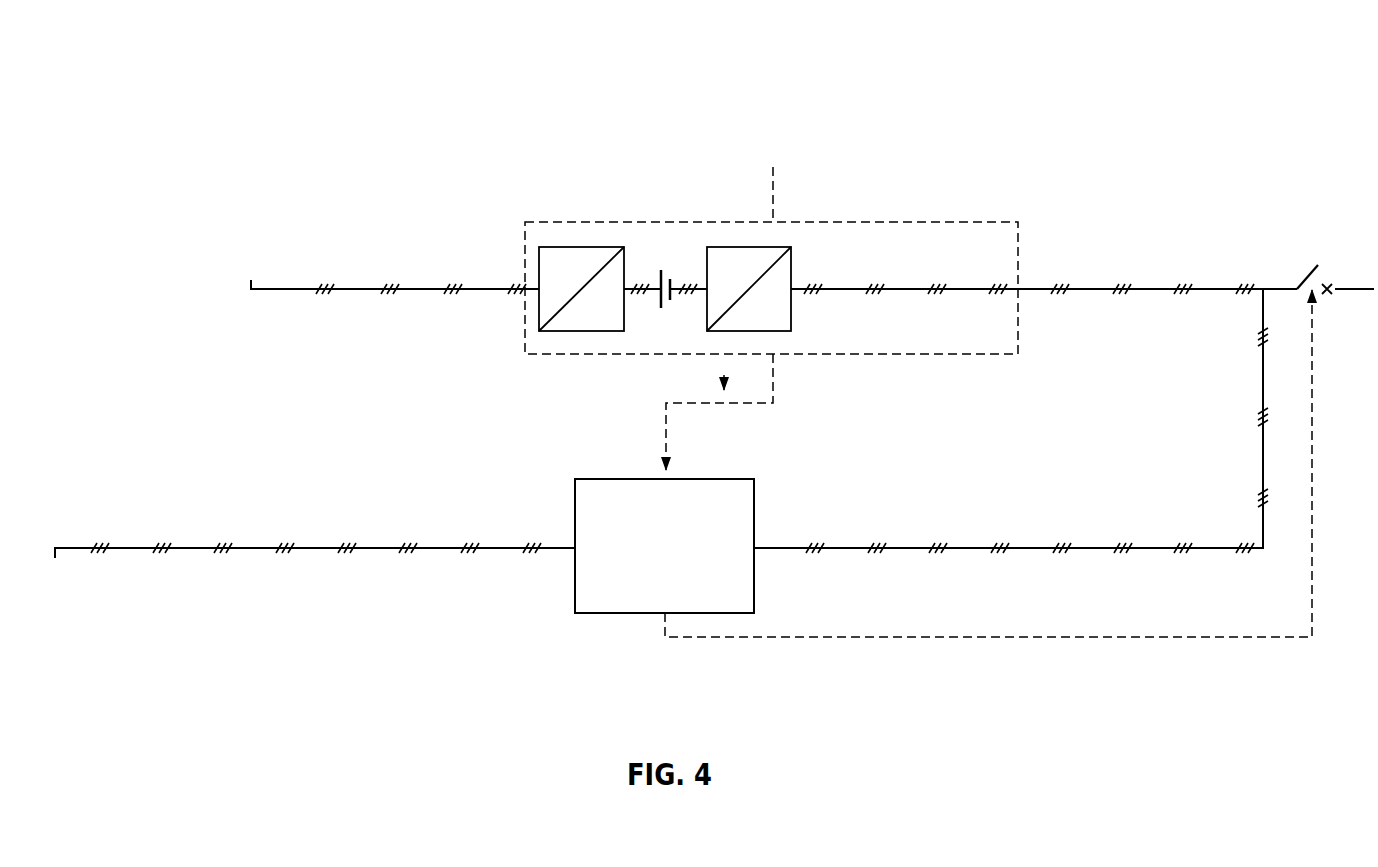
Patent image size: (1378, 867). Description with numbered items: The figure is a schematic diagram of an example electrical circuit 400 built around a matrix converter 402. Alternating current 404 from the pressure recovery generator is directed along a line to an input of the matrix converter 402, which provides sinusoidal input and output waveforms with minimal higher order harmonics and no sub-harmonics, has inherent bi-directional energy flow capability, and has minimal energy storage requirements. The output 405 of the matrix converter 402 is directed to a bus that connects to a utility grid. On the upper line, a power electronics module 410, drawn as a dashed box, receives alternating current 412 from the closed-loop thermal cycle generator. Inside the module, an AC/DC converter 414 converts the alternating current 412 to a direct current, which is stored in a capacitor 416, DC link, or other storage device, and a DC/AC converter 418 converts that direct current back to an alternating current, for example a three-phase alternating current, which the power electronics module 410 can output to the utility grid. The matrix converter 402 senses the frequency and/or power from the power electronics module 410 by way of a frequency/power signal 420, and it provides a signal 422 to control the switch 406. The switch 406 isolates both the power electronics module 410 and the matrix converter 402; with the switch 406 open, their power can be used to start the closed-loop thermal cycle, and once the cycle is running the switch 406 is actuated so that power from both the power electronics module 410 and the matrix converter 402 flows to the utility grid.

The electrical circuit 400 is at (203, 86).
The matrix converter 402 is at (608, 479).
The alternating current 404 is at (258, 547).
The output 405 is at (1035, 545).
The switch 406 is at (1303, 256).
The power electronics module 410 is at (978, 212).
The alternating current 412 is at (362, 289).
The AC/DC converter 414 is at (582, 234).
The capacitor 416 is at (672, 240).
The DC/AC converter 418 is at (780, 234).
The frequency/power signal 420 is at (667, 403).
The signal 422 is at (1000, 636).